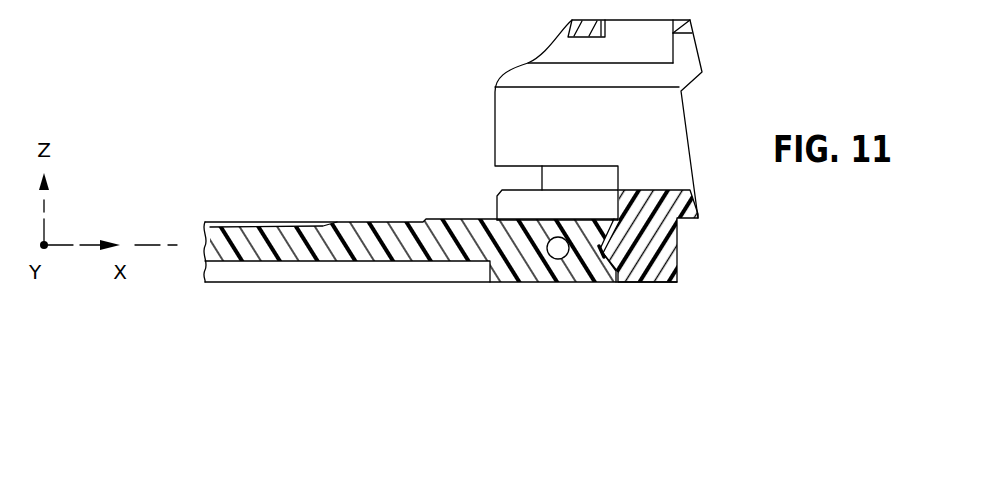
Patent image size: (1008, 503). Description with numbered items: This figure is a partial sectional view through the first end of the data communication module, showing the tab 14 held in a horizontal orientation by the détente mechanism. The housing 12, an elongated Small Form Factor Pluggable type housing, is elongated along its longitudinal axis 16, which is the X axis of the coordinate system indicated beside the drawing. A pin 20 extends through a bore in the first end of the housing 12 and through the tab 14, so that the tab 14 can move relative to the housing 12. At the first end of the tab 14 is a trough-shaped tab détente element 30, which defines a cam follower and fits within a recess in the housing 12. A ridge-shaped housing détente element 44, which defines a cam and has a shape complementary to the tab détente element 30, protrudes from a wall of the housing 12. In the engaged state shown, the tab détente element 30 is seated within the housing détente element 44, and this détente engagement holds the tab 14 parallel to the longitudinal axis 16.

The housing 12 is at (688, 125).
The tab 14 is at (386, 221).
The longitudinal axis 16 is at (160, 247).
The pin 20 is at (551, 259).
The tab détente element 30 is at (613, 282).
The housing détente element 44 is at (606, 252).